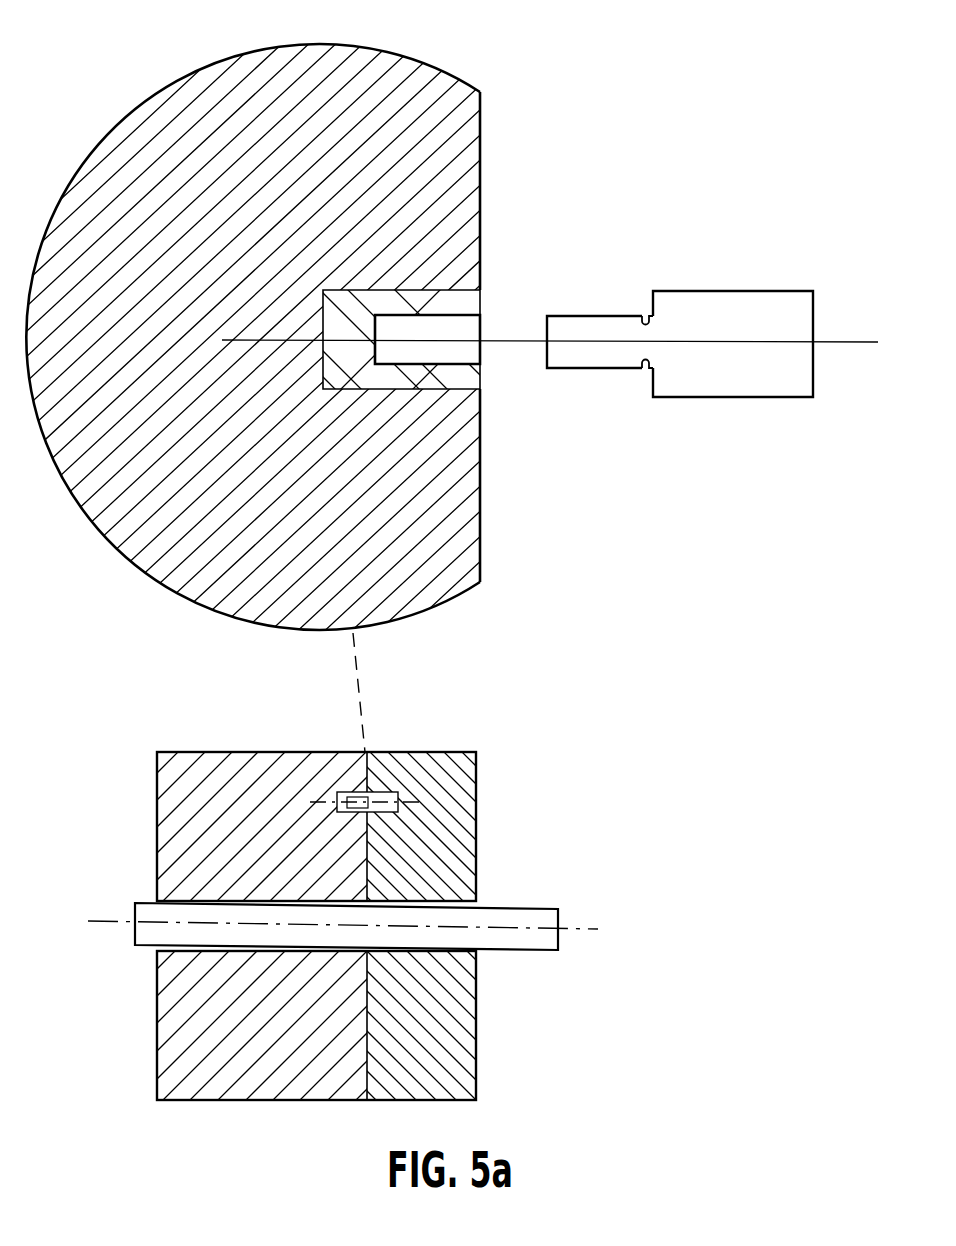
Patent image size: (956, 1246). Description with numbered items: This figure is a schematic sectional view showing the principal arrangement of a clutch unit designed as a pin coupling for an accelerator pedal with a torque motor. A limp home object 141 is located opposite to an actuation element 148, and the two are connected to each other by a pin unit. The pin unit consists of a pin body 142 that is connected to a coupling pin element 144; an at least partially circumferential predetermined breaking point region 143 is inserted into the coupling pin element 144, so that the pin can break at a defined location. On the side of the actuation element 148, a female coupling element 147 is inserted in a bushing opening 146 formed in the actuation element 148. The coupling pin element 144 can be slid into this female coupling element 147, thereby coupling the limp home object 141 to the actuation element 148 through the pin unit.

The limp home object 141 is at (477, 826).
The pin body 142 is at (740, 298).
The predetermined breaking point region 143 is at (646, 366).
The coupling pin element 144 is at (593, 371).
The bushing opening 146 is at (472, 270).
The female coupling element 147 is at (483, 296).
The actuation element 148 is at (415, 70).